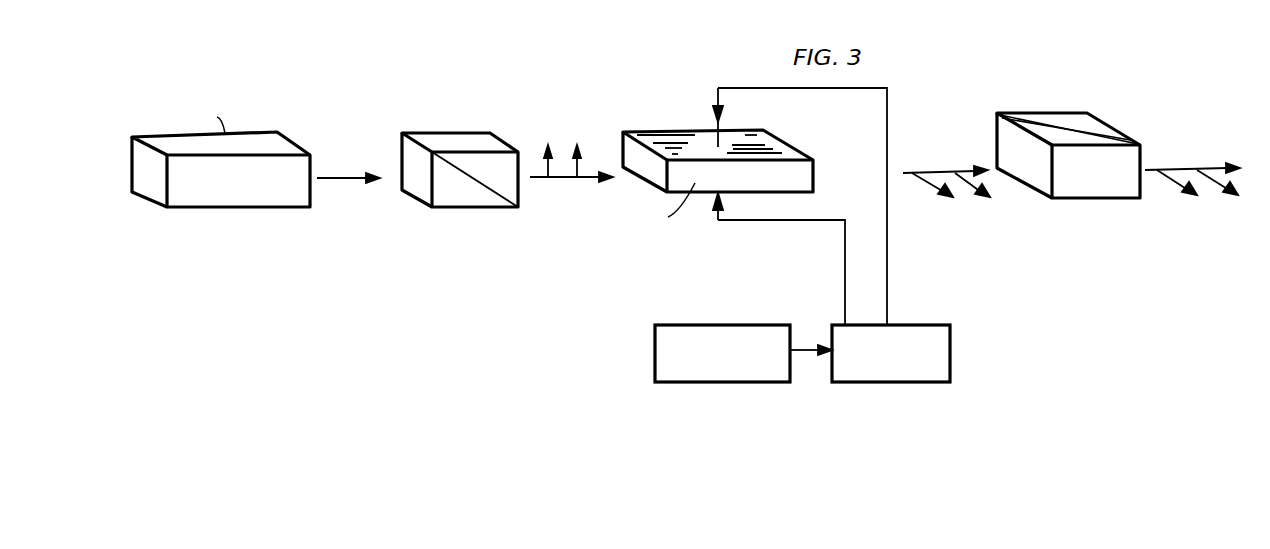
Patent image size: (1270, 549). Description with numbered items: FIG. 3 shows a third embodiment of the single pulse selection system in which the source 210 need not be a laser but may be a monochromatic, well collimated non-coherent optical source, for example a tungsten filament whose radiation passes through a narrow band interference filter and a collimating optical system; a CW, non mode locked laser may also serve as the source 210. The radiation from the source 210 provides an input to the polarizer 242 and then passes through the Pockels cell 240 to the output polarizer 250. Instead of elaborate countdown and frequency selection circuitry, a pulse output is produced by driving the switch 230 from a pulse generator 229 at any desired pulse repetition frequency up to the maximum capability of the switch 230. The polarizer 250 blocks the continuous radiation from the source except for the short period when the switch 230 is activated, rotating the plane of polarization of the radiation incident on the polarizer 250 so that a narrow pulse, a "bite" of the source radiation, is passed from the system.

The source 210 is at (232, 208).
The polarizer 242 is at (498, 208).
The Pockels cell 240 is at (780, 138).
The polarizer 250 is at (1015, 112).
The pulse generator 229 is at (742, 387).
The switch 230 is at (915, 387).